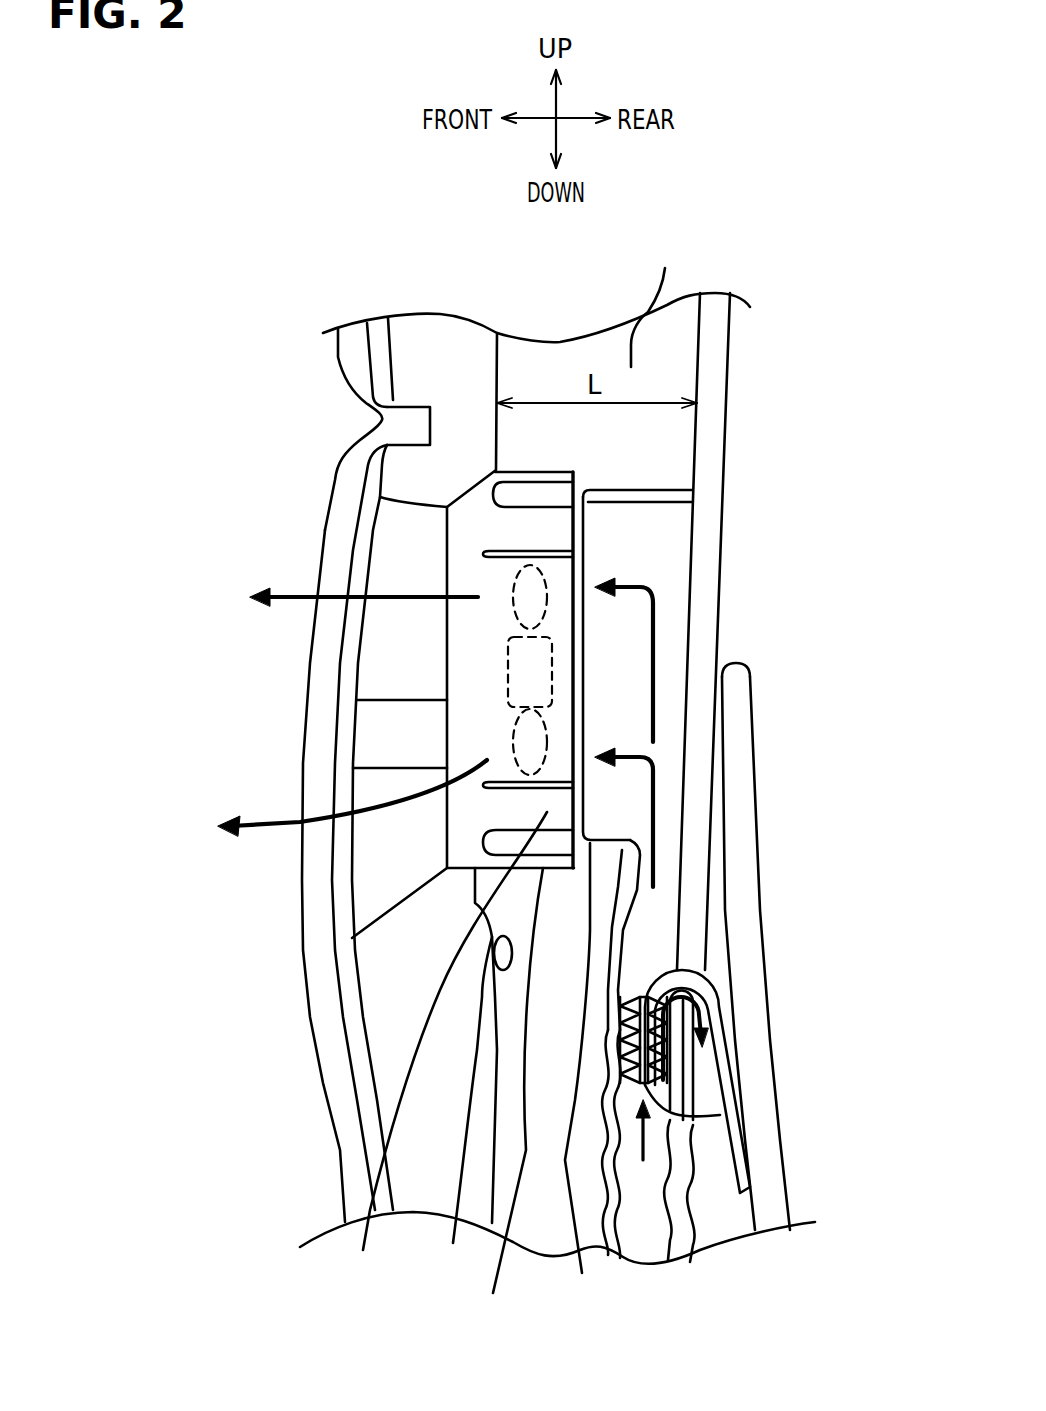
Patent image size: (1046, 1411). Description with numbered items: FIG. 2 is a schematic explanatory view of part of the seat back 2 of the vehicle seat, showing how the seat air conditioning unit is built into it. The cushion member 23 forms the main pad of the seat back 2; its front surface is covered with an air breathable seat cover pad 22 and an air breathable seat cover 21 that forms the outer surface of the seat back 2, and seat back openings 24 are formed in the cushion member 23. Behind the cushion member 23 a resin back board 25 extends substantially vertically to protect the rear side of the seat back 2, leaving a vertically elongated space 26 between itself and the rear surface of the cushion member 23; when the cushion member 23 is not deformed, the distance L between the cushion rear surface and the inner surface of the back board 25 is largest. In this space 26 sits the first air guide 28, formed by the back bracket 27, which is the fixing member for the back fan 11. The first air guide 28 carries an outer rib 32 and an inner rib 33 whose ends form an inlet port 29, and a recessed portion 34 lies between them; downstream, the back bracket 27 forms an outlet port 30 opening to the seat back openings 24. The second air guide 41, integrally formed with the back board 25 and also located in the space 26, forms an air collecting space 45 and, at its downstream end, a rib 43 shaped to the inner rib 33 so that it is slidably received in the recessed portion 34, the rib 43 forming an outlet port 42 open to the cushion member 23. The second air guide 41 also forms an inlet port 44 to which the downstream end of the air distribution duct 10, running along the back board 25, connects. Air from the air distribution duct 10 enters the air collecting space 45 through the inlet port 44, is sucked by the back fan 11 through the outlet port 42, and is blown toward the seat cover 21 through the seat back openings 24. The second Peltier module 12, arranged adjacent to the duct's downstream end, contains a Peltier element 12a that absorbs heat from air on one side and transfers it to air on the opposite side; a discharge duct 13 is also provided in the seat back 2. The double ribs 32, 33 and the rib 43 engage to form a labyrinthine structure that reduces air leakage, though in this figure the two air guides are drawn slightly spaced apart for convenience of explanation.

The seat back 2 is at (446, 300).
The air distribution duct 10 is at (613, 1170).
The back fan 11 is at (533, 562).
The second Peltier module 12 is at (667, 1057).
The Peltier element 12a is at (697, 1117).
The discharge duct 13 is at (720, 993).
The seat cover 21 is at (333, 466).
The seat cover pad 22 is at (337, 1125).
The cushion member 23 is at (410, 330).
The seat back openings 24 is at (410, 520).
The back board 25 is at (733, 347).
The space 26 is at (566, 551).
The back bracket 27 is at (447, 1047).
The first air guide 28 is at (507, 813).
The inlet port 29 is at (570, 662).
The outlet port 30 is at (440, 603).
The outer rib 32 is at (510, 1098).
The inner rib 33 is at (472, 1075).
The recessed portion 34 is at (687, 420).
The second air guide 41 is at (632, 487).
The outlet port 42 is at (587, 537).
The rib 43 is at (582, 1075).
The inlet port 44 is at (677, 848).
The air collecting space 45 is at (653, 563).